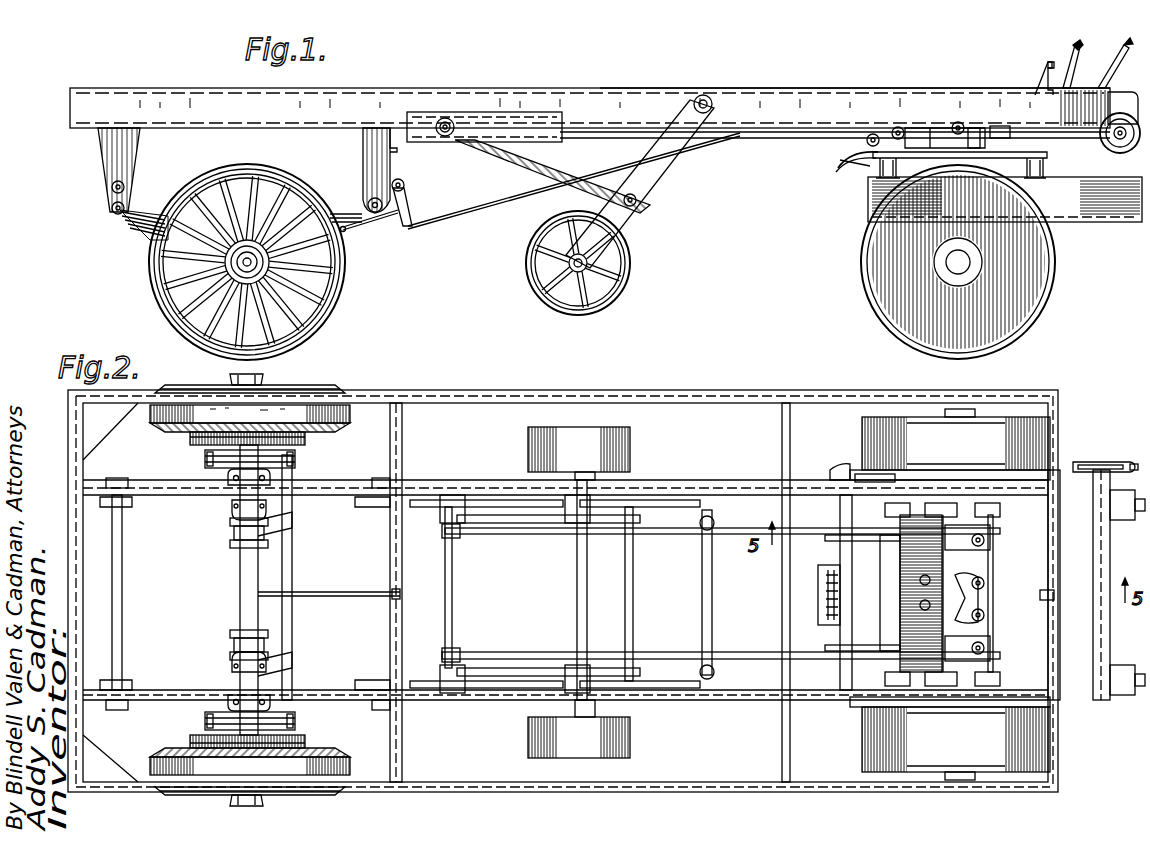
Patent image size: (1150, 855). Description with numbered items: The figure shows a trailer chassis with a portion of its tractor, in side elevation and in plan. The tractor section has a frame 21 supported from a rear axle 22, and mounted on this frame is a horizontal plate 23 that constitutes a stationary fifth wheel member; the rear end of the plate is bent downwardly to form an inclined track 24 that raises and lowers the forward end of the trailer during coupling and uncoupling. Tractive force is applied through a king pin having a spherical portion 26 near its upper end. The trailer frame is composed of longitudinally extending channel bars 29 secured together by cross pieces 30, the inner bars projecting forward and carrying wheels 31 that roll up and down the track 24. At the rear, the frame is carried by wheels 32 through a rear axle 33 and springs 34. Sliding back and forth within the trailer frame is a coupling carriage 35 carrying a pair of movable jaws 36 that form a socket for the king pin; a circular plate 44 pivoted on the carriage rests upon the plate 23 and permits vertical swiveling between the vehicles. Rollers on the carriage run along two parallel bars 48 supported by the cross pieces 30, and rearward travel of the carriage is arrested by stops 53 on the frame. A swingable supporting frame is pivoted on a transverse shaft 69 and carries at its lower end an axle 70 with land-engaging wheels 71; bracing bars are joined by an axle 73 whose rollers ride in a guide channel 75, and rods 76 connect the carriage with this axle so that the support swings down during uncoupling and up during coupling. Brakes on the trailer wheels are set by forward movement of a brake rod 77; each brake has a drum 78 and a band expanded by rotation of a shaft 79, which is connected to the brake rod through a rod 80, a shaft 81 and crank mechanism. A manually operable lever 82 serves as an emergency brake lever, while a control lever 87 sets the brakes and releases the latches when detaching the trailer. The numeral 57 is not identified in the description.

In FIG. 1, the frame 21 is at (1114, 210).
In FIG. 1, the rear axle 22 is at (966, 262).
In FIG. 2, the rear axle 22 is at (956, 594).
In FIG. 1, the horizontal plate 23 is at (1055, 152).
In FIG. 1, the inclined track 24 is at (846, 166).
In FIG. 1, the spherical portion 26 is at (405, 100).
In FIG. 1, the channel bars 29 is at (836, 110).
In FIG. 2, the channel bars 29 is at (683, 398).
In FIG. 2, the cross pieces 30 is at (404, 430).
In FIG. 1, the wheels 31 is at (1122, 140).
In FIG. 2, the wheels 31 is at (1132, 700).
In FIG. 1, the wheels 32 is at (152, 265).
In FIG. 2, the rear axle 33 is at (240, 575).
In FIG. 1, the springs 34 is at (140, 222).
In FIG. 1, the coupling carriage 35 is at (978, 130).
In FIG. 2, the coupling carriage 35 is at (992, 538).
In FIG. 2, the movable jaws 36 is at (992, 592).
In FIG. 1, the circular plate 44 is at (838, 168).
In FIG. 1, the parallel bars 48 is at (1040, 90).
In FIG. 2, the stops 53 is at (865, 688).
In FIG. 2, the rod 57 is at (1090, 598).
In FIG. 2, the transverse shaft 69 is at (712, 604).
In FIG. 2, the axle 70 is at (577, 612).
In FIG. 1, the land-engaging wheels 71 is at (620, 205).
In FIG. 2, the land-engaging wheels 71 is at (455, 480).
In FIG. 2, the axle 73 is at (455, 590).
In FIG. 2, the guide channel 75 is at (485, 500).
In FIG. 1, the rods 76 is at (796, 140).
In FIG. 2, the rods 76 is at (672, 535).
In FIG. 1, the brake rod 77 is at (466, 215).
In FIG. 2, the drum 78 is at (300, 748).
In FIG. 2, the shaft 79 is at (295, 680).
In FIG. 1, the rod 80 is at (382, 222).
In FIG. 2, the rod 80 is at (335, 598).
In FIG. 1, the shaft 81 is at (404, 185).
In FIG. 1, the manually operable lever 82 is at (1072, 46).
In FIG. 2, the manually operable lever 82 is at (1078, 462).
In FIG. 1, the control lever 87 is at (1120, 48).